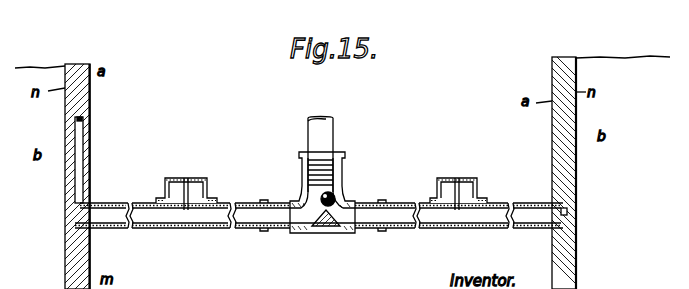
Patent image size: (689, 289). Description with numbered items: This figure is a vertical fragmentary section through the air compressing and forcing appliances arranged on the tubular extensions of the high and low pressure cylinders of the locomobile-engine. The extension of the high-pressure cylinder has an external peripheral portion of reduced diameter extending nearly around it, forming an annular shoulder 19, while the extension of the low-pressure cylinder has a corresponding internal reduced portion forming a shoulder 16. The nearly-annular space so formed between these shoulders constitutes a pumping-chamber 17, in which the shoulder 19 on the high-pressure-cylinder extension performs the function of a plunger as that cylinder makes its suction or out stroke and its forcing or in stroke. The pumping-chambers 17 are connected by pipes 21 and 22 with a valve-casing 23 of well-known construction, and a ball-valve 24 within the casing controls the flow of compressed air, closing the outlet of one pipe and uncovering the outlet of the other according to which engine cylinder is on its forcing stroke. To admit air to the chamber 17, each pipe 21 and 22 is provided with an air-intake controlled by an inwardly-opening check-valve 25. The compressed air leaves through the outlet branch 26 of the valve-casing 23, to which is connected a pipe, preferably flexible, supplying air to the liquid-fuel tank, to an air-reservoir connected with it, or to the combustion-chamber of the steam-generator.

The shoulder 16 is at (67, 233).
The pumping-chamber 17 is at (82, 160).
The annular shoulder 19 is at (81, 119).
The pipe 21 is at (182, 226).
The pipe 22 is at (459, 226).
The valve-casing 23 is at (325, 203).
The ball-valve 24 is at (335, 196).
The check-valve 25 is at (187, 178).
The outlet branch 26 is at (333, 140).